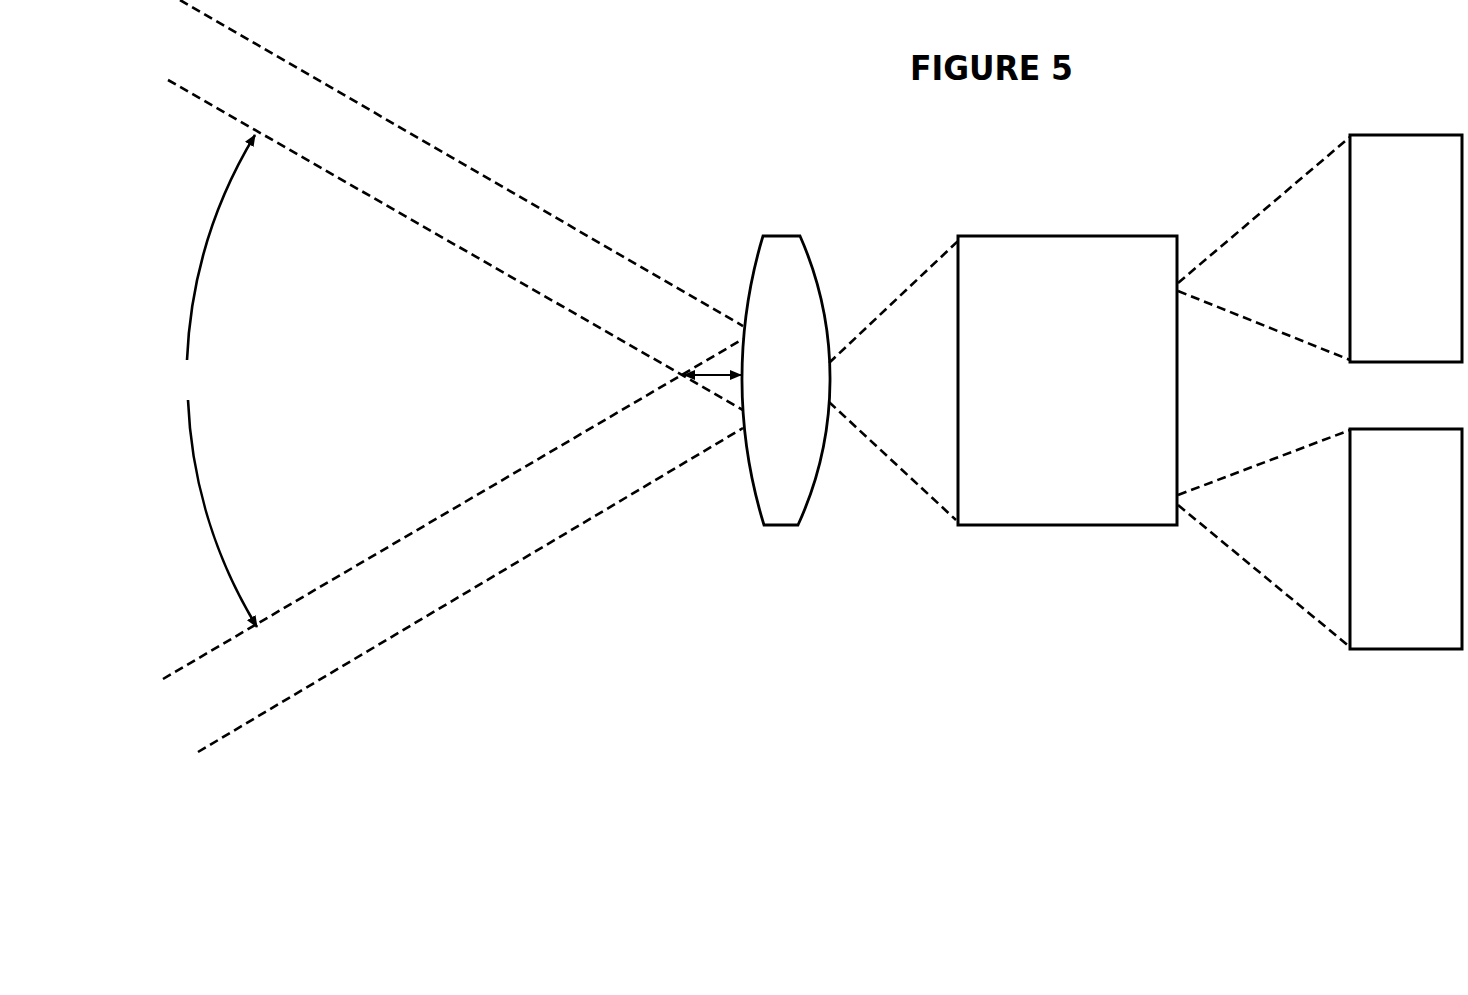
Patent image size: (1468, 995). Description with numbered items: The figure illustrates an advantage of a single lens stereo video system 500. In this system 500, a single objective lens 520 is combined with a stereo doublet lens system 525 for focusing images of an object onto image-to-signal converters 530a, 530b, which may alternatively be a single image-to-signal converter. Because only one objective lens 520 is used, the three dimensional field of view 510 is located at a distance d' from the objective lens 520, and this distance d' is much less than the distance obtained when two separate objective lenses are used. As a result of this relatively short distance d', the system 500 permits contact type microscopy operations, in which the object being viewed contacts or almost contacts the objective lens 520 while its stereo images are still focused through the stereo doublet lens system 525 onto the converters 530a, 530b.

The system 500 is at (1010, 166).
The three dimensional field of view 510 is at (510, 392).
The objective lens 520 is at (817, 429).
The stereo doublet lens system 525 is at (1162, 517).
The image-to-signal converter 530a is at (1447, 357).
The image-to-signal converter 530b is at (1447, 644).